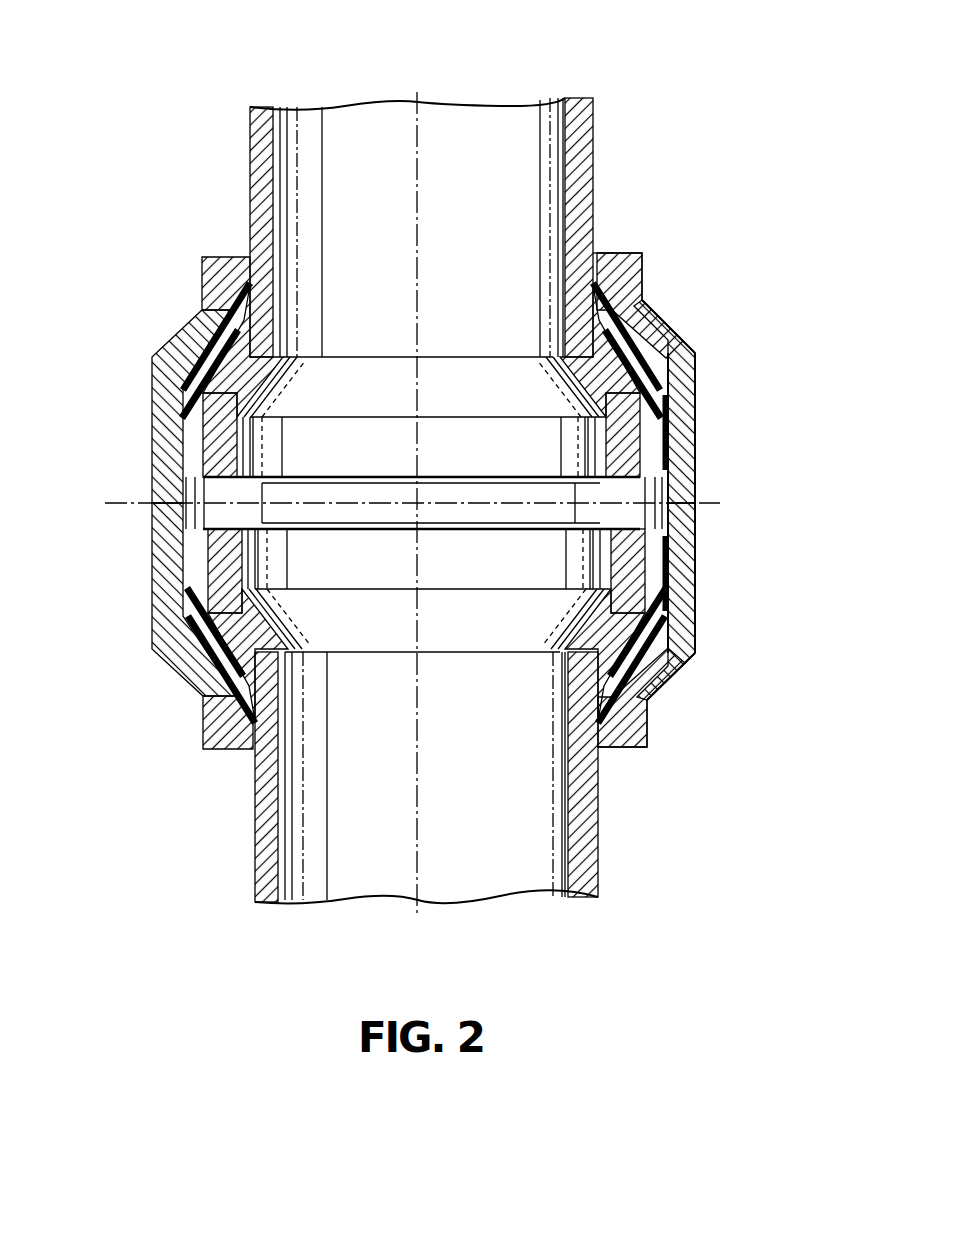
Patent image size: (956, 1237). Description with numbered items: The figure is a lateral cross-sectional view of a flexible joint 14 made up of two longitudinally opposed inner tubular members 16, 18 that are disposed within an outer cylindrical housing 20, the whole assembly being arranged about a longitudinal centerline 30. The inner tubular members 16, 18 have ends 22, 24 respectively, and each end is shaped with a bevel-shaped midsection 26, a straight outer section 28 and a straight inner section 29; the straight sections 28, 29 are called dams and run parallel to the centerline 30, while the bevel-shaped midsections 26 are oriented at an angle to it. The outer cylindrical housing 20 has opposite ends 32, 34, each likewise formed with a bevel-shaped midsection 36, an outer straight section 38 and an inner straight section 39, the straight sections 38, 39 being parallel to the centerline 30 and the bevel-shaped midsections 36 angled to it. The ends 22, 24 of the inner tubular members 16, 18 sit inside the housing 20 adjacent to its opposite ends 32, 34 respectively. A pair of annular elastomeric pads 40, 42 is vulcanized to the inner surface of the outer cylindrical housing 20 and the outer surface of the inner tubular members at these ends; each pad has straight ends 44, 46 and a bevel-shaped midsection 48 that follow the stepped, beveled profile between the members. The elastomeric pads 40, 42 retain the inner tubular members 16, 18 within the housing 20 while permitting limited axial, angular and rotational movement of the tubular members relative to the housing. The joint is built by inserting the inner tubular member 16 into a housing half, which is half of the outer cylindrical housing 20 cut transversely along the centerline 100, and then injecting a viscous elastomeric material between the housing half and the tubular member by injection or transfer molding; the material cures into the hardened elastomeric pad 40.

The flexible joint 14 is at (717, 863).
The inner tubular member 16 is at (595, 140).
The inner tubular member 18 is at (600, 866).
The outer cylindrical housing 20 is at (702, 606).
The end of inner tubular member 22 is at (212, 322).
The end of inner tubular member 24 is at (222, 662).
The bevel-shaped midsection 26 is at (165, 360).
The straight outer section 28 is at (210, 437).
The straight inner section 29 is at (230, 292).
The centerline 30 is at (419, 135).
The end of outer cylindrical housing 32 is at (659, 307).
The end of outer cylindrical housing 34 is at (682, 672).
The bevel-shaped midsection 36 is at (688, 337).
The outer straight section 38 is at (645, 275).
The inner straight section 39 is at (697, 408).
The elastomeric pad 40 is at (607, 251).
The elastomeric pad 42 is at (614, 755).
The straight end of elastomeric pad 44 is at (240, 257).
The straight end of elastomeric pad 46 is at (187, 397).
The bevel-shaped midsection of elastomeric pad 48 is at (193, 340).
The centerline 100 is at (155, 500).